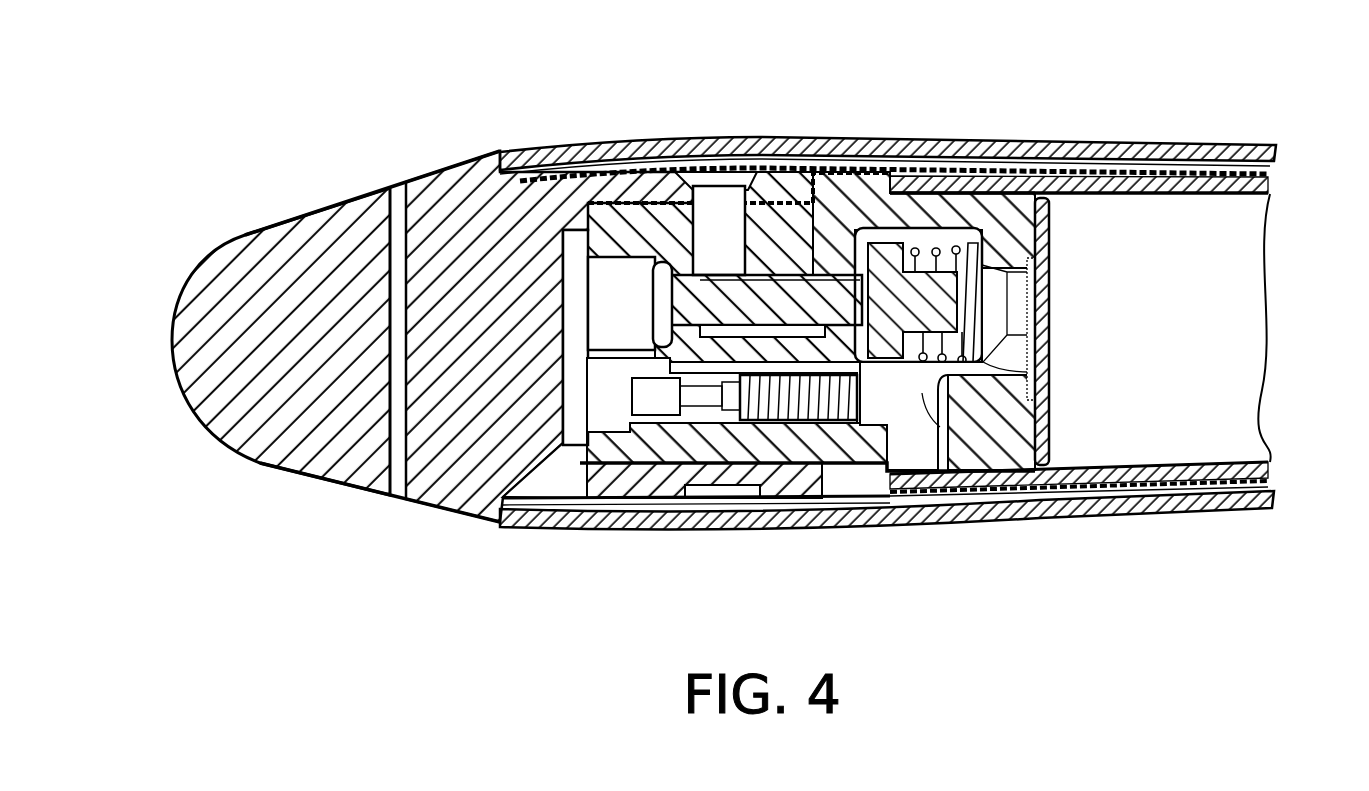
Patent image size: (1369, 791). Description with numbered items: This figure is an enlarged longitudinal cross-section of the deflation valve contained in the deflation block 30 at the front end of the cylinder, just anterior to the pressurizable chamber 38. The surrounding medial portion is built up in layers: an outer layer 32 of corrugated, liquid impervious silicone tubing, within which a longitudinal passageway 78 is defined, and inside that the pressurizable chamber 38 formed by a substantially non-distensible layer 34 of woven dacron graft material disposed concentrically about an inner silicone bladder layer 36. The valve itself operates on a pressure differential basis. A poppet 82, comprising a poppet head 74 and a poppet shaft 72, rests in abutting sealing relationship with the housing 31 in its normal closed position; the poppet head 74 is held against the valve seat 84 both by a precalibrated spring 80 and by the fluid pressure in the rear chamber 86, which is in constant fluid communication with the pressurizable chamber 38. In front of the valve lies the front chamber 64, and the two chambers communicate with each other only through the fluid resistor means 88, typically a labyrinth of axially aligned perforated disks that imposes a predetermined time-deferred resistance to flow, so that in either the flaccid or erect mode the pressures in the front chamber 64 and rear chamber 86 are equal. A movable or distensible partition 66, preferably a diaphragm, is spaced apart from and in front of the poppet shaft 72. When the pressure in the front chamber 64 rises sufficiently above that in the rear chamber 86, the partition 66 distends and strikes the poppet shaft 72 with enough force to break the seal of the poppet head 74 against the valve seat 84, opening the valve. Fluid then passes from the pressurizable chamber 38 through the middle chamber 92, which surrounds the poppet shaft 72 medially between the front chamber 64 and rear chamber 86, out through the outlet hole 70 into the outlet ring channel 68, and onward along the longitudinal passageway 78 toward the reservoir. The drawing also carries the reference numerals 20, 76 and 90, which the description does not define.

The nose cap 20 is at (237, 232).
The deflation block 30 is at (490, 522).
The housing 31 is at (628, 225).
The outer layer 32 is at (1063, 140).
The non-distensible layer 34 is at (1120, 165).
The inner layer 36 is at (1268, 188).
The pressurizable chamber 38 is at (1232, 322).
The front chamber 64 is at (427, 173).
The partition 66 is at (573, 283).
The outlet ring channel 68 is at (700, 182).
The outlet hole 70 is at (723, 210).
The poppet shaft 72 is at (795, 293).
The poppet head 74 is at (890, 228).
The block portion 76 is at (1038, 160).
The longitudinal passageway 78 is at (1223, 167).
The precalibrated spring 80 is at (1030, 378).
The poppet 82 is at (1037, 420).
The valve seat 84 is at (860, 348).
The rear chamber 86 is at (987, 497).
The fluid resistor means 88 is at (790, 418).
The lower wall 90 is at (567, 500).
The middle chamber 92 is at (773, 280).